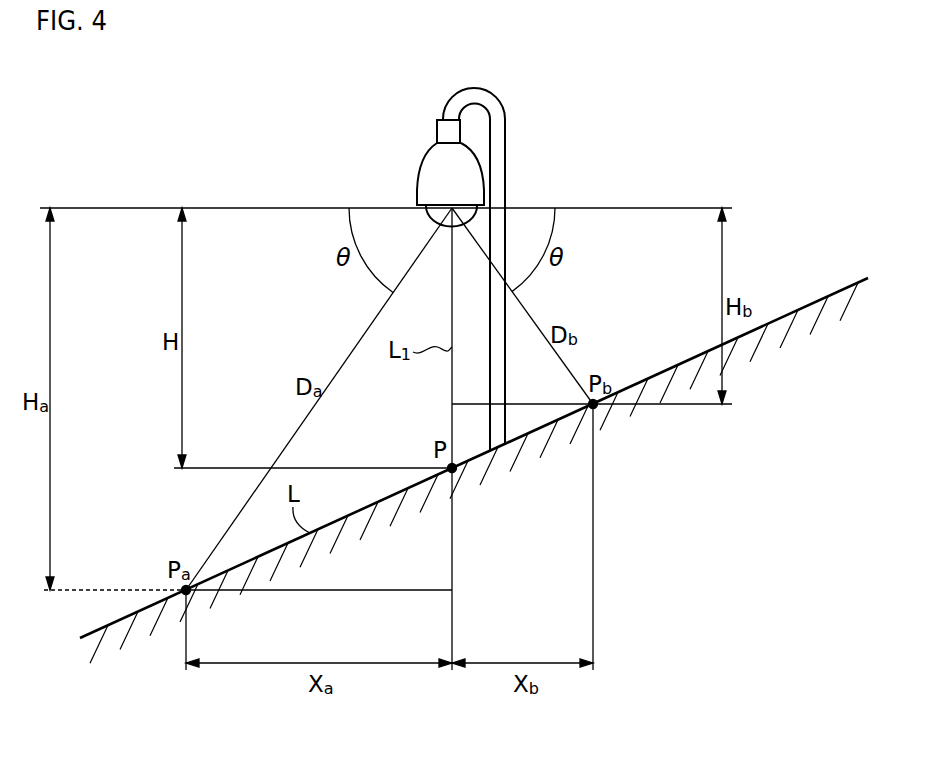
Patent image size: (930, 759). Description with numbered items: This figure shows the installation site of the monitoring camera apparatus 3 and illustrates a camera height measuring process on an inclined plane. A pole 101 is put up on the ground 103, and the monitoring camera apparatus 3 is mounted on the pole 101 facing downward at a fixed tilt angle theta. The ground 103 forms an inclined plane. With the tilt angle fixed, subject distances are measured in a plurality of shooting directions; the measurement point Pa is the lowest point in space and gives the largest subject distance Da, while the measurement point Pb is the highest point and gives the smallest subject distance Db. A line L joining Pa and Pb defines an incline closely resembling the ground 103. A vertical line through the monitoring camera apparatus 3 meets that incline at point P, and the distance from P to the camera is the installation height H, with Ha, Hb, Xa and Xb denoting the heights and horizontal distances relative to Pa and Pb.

The monitoring camera apparatus 3 is at (429, 179).
The pole 101 is at (504, 152).
The ground 103 is at (833, 293).